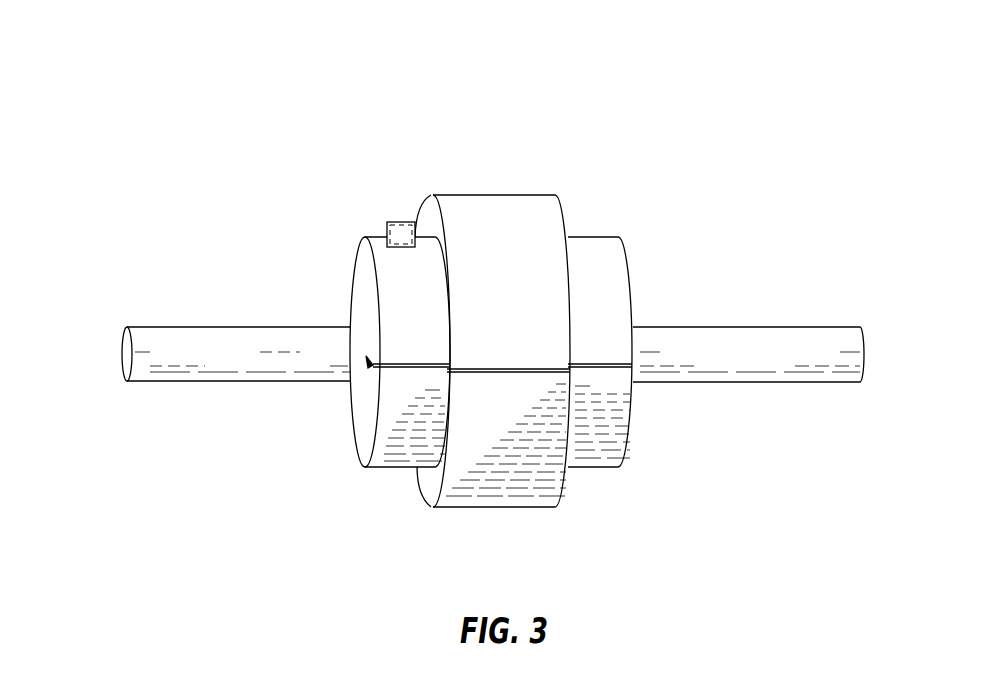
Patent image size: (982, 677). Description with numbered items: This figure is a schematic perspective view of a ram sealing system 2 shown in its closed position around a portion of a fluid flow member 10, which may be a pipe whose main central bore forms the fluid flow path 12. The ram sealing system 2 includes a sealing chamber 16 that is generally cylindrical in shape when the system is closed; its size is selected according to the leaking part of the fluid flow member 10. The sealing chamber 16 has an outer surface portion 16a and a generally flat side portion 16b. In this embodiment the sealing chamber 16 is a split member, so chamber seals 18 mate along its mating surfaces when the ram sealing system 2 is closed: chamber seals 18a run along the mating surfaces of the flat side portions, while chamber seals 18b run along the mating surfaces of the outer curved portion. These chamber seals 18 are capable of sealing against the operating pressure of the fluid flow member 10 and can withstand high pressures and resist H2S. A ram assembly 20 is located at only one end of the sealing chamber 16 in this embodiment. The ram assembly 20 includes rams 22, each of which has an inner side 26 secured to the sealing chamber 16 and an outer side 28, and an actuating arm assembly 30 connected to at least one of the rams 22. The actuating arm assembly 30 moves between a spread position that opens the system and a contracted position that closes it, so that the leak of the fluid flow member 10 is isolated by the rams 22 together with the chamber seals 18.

The ram sealing system 2 is at (214, 94).
The fluid flow member 10 is at (760, 375).
The fluid flow path 12 is at (127, 352).
The sealing chamber 16 is at (525, 500).
The outer surface portion 16a is at (477, 497).
The side portion 16b is at (428, 485).
The chamber seals 18 is at (520, 365).
The chamber seals 18a is at (373, 363).
The chamber seals 18b is at (554, 371).
The ram assembly 20 is at (636, 480).
The ram 22 is at (623, 280).
The inner side 26 is at (450, 423).
The outer side 28 is at (358, 425).
The actuating arm assembly 30 is at (371, 220).